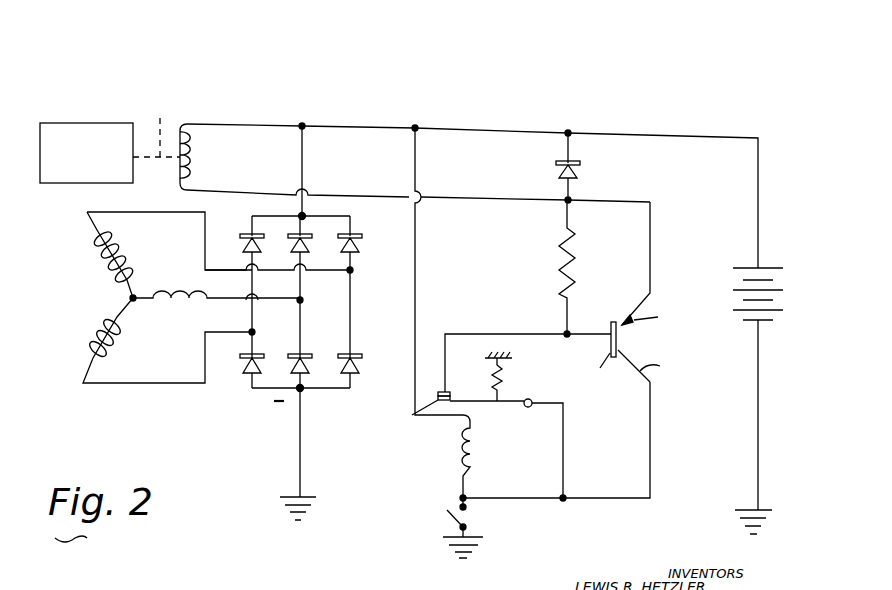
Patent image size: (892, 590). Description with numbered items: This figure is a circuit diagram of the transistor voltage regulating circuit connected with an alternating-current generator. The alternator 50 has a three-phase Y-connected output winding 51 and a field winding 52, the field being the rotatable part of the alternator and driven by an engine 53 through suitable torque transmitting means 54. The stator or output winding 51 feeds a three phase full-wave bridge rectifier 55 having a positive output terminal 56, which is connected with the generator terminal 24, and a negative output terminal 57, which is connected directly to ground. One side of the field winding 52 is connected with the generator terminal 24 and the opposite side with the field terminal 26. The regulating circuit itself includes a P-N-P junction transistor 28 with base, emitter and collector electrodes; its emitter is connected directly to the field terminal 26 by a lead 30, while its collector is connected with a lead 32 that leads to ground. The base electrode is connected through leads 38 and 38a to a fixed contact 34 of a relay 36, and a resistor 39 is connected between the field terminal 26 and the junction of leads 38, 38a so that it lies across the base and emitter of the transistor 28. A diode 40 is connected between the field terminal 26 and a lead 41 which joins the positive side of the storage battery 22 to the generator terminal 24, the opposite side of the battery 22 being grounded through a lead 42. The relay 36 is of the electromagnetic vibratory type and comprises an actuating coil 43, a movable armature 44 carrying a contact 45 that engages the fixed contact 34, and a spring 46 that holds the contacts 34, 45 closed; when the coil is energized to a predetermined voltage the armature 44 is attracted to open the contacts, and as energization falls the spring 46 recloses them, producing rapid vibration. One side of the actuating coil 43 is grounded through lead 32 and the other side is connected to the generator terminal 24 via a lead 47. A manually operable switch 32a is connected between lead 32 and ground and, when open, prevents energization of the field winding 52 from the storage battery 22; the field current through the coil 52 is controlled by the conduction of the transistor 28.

The storage battery 22 is at (762, 268).
The generator terminal 24 is at (413, 127).
The field terminal 26 is at (570, 199).
The P-N-P junction transistor 28 is at (620, 340).
The lead 30 is at (653, 212).
The lead 32 is at (602, 497).
The manually operable switch 32a is at (456, 519).
The fixed contact 34 is at (448, 392).
The relay 36 is at (448, 485).
The lead 38 is at (500, 334).
The lead 38a is at (580, 334).
The resistor 39 is at (573, 262).
The diode 40 is at (556, 163).
The lead 41 is at (712, 138).
The lead 42 is at (755, 458).
The actuating coil 43 is at (476, 452).
The movable armature 44 is at (480, 402).
The contact 45 is at (442, 402).
The spring 46 is at (500, 379).
The lead 47 is at (417, 240).
The alternator 50 is at (175, 262).
The three-phase Y-connected output winding 51 is at (117, 335).
The field winding 52 is at (197, 162).
The engine 53 is at (58, 138).
The torque transmitting means 54 is at (156, 125).
The three phase full-wave bridge rectifier 55 is at (338, 313).
The positive output terminal 56 is at (304, 215).
The negative output terminal 57 is at (302, 390).